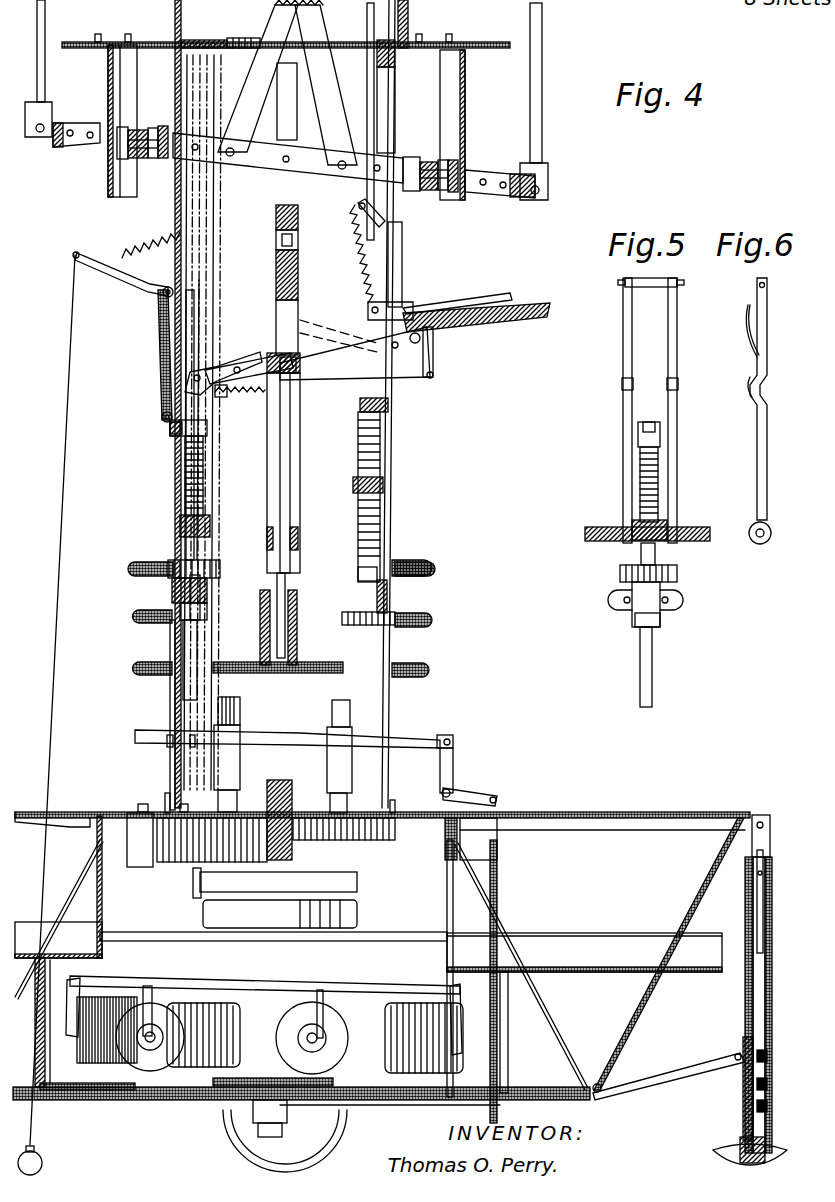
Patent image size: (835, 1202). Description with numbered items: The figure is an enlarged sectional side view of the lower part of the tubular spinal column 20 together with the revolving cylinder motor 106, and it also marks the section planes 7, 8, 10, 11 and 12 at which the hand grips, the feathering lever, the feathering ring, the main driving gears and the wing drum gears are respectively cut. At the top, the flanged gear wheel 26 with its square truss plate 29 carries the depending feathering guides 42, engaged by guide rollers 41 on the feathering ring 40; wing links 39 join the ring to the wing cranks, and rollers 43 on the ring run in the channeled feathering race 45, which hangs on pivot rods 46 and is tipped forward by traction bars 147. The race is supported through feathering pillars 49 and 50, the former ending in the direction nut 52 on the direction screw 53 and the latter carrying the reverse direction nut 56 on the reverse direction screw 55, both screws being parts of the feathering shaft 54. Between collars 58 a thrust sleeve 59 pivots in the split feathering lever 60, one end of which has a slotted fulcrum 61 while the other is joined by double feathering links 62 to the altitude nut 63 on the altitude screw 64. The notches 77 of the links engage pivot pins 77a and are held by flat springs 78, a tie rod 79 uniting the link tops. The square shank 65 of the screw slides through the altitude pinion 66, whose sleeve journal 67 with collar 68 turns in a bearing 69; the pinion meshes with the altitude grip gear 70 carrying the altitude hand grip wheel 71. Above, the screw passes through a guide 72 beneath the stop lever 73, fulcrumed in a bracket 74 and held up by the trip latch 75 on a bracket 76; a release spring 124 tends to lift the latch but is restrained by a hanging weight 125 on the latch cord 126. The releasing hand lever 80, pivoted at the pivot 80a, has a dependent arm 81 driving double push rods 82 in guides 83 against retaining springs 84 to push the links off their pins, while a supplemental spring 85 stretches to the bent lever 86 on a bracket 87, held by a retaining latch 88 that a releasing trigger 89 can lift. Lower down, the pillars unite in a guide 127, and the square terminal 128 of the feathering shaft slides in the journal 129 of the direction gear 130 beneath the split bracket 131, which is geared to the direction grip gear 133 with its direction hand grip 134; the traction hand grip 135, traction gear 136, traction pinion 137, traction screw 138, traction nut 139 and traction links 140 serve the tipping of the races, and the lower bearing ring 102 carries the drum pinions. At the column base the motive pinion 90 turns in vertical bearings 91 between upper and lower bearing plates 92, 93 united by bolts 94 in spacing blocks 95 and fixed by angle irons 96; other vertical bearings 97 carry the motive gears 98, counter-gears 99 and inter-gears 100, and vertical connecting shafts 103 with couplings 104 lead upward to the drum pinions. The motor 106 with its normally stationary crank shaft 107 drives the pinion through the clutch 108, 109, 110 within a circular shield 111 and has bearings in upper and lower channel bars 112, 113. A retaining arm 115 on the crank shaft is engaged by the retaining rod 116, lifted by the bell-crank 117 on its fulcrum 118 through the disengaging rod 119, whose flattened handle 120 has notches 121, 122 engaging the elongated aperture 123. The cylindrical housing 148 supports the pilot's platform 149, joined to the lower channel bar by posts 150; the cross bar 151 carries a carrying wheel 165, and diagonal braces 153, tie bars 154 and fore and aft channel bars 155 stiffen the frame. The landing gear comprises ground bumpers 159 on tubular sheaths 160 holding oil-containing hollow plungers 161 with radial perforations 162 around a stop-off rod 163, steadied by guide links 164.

In FIG. 4, the section line 7 is at (130, 559).
In FIG. 4, the section line 8 is at (150, 348).
In FIG. 4, the rocking arms 10 is at (108, 152).
In FIG. 4, the section line 11 is at (82, 838).
In FIG. 4, the top frame member 12 is at (167, 20).
In FIG. 4, the threaded shaft 20 is at (392, 432).
In FIG. 4, the upright post 26 is at (410, 12).
In FIG. 4, the bolts 29 is at (82, 50).
In FIG. 4, the vertical rods 39 is at (45, 12).
In FIG. 4, the lever 40 is at (490, 196).
In FIG. 4, the collar 41 is at (120, 148).
In FIG. 4, the bracket 42 is at (120, 197).
In FIG. 4, the pin 43 is at (152, 165).
In FIG. 4, the threaded shaft 45 is at (158, 128).
In FIG. 4, the V-shaped link 46 is at (286, 159).
In FIG. 4, the bar 49 is at (286, 101).
In FIG. 4, the central shaft 50 is at (297, 427).
In FIG. 4, the threaded portion 52 is at (298, 240).
In FIG. 4, the threaded section 53 is at (272, 220).
In FIG. 4, the inner rod 54 is at (297, 468).
In FIG. 4, the nut 55 is at (272, 248).
In FIG. 4, the threaded section 56 is at (272, 275).
In FIG. 4, the cap 58 is at (277, 357).
In FIG. 4, the collar 59 is at (290, 375).
In FIG. 4, the lever 60 is at (249, 361).
In FIG. 4, the lever 61 is at (370, 360).
In FIG. 4, the vertical bar 62 is at (192, 380).
In FIG. 5, the vertical bar 62 is at (634, 332).
In FIG. 6, the vertical bar 62 is at (755, 452).
In FIG. 4, the block 63 is at (210, 525).
In FIG. 5, the block 63 is at (635, 530).
In FIG. 4, the screw thread 64 is at (205, 470).
In FIG. 5, the screw thread 64 is at (640, 470).
In FIG. 4, the rod 65 is at (190, 680).
In FIG. 5, the rod 65 is at (645, 658).
In FIG. 4, the gear 66 is at (215, 560).
In FIG. 5, the gear 66 is at (620, 572).
In FIG. 4, the pin 67 is at (200, 590).
In FIG. 4, the collar 68 is at (213, 614).
In FIG. 5, the collar 68 is at (637, 620).
In FIG. 4, the bearing 69 is at (170, 588).
In FIG. 5, the bearing 69 is at (640, 608).
In FIG. 4, the arm 70 is at (395, 565).
In FIG. 4, the arm 71 is at (135, 565).
In FIG. 4, the nut 72 is at (205, 430).
In FIG. 5, the nut 72 is at (638, 438).
In FIG. 4, the pivot 73 is at (162, 416).
In FIG. 4, the link 74 is at (170, 430).
In FIG. 4, the lever 75 is at (135, 290).
In FIG. 4, the pivot pin 76 is at (165, 280).
In FIG. 4, the cam lever 77 is at (215, 366).
In FIG. 5, the cam lever 77 is at (633, 385).
In FIG. 6, the cam lever 77 is at (770, 385).
In FIG. 4, the lever extension 77a is at (188, 393).
In FIG. 4, the spring strip 78 is at (160, 322).
In FIG. 6, the spring strip 78 is at (745, 318).
In FIG. 4, the cross piece 79 is at (198, 280).
In FIG. 5, the cross piece 79 is at (651, 287).
In FIG. 4, the lever arm 80 is at (537, 308).
In FIG. 4, the pivot 80a is at (405, 355).
In FIG. 4, the block 81 is at (433, 360).
In FIG. 4, the pin 82 is at (436, 378).
In FIG. 4, the block 83 is at (225, 397).
In FIG. 4, the spring 84 is at (245, 396).
In FIG. 4, the spring 85 is at (338, 262).
In FIG. 4, the link plate 86 is at (402, 245).
In FIG. 4, the link 87 is at (380, 230).
In FIG. 4, the bracket 88 is at (418, 300).
In FIG. 4, the arm 89 is at (500, 296).
In FIG. 4, the clutch 90 is at (360, 882).
In FIG. 4, the shaft 91 is at (295, 805).
In FIG. 4, the rod 92 is at (167, 795).
In FIG. 4, the plate 93 is at (130, 868).
In FIG. 4, the bolt 94 is at (140, 806).
In FIG. 4, the plate 95 is at (127, 840).
In FIG. 4, the bolt 96 is at (185, 822).
In FIG. 4, the gear 97 is at (245, 805).
In FIG. 4, the bracket 98 is at (165, 860).
In FIG. 4, the rod 99 is at (390, 815).
In FIG. 4, the base plate 100 is at (135, 812).
In FIG. 4, the column top 102 is at (215, 40).
In FIG. 4, the threaded stud 103 is at (240, 712).
In FIG. 4, the shaft 104 is at (240, 735).
In FIG. 4, the drum assembly 106 is at (360, 1030).
In FIG. 4, the motor 107 is at (255, 1130).
In FIG. 4, the clutch plate 108 is at (280, 915).
In FIG. 4, the gear 109 is at (195, 870).
In FIG. 4, the clutch plate 110 is at (210, 895).
In FIG. 4, the clutch housing 111 is at (358, 905).
In FIG. 4, the plate 112 is at (200, 942).
In FIG. 4, the bottom plate 113 is at (130, 1097).
In FIG. 4, the lower plate 115 is at (355, 1102).
In FIG. 4, the post 116 is at (497, 845).
In FIG. 4, the link 117 is at (457, 753).
In FIG. 4, the lever 118 is at (460, 782).
In FIG. 4, the block 119 is at (417, 740).
In FIG. 4, the rod 120 is at (140, 740).
In FIG. 4, the pin 121 is at (165, 748).
In FIG. 4, the pin 122 is at (192, 750).
In FIG. 4, the rod 123 is at (170, 728).
In FIG. 4, the spring 124 is at (125, 252).
In FIG. 4, the weight 125 is at (43, 1163).
In FIG. 4, the rod 126 is at (63, 495).
In FIG. 4, the collar 127 is at (296, 540).
In FIG. 4, the shaft 128 is at (297, 577).
In FIG. 4, the bracket upright 129 is at (262, 630).
In FIG. 4, the bracket base 130 is at (330, 673).
In FIG. 4, the bracket 131 is at (298, 635).
In FIG. 4, the arm 133 is at (135, 668).
In FIG. 4, the arm 134 is at (425, 670).
In FIG. 4, the arm 135 is at (430, 627).
In FIG. 4, the arm 136 is at (135, 616).
In FIG. 4, the upright 137 is at (297, 605).
In FIG. 4, the thread 138 is at (380, 455).
In FIG. 4, the nut 139 is at (383, 485).
In FIG. 4, the rod 140 is at (370, 110).
In FIG. 4, the arm 147 is at (320, 170).
In FIG. 4, the wall 148 is at (95, 900).
In FIG. 4, the beam 149 is at (580, 968).
In FIG. 4, the post 150 is at (508, 1047).
In FIG. 4, the plate 151 is at (345, 1082).
In FIG. 4, the diagonal brace 153 is at (75, 850).
In FIG. 4, the diagonal brace 154 is at (700, 848).
In FIG. 4, the top plate 155 is at (30, 812).
In FIG. 4, the foot 159 is at (740, 1152).
In FIG. 4, the post 160 is at (745, 893).
In FIG. 4, the post 161 is at (758, 975).
In FIG. 4, the pins 162 is at (767, 1056).
In FIG. 4, the rod 163 is at (745, 1125).
In FIG. 4, the arm 164 is at (700, 1060).
In FIG. 4, the wheel 165 is at (320, 1140).